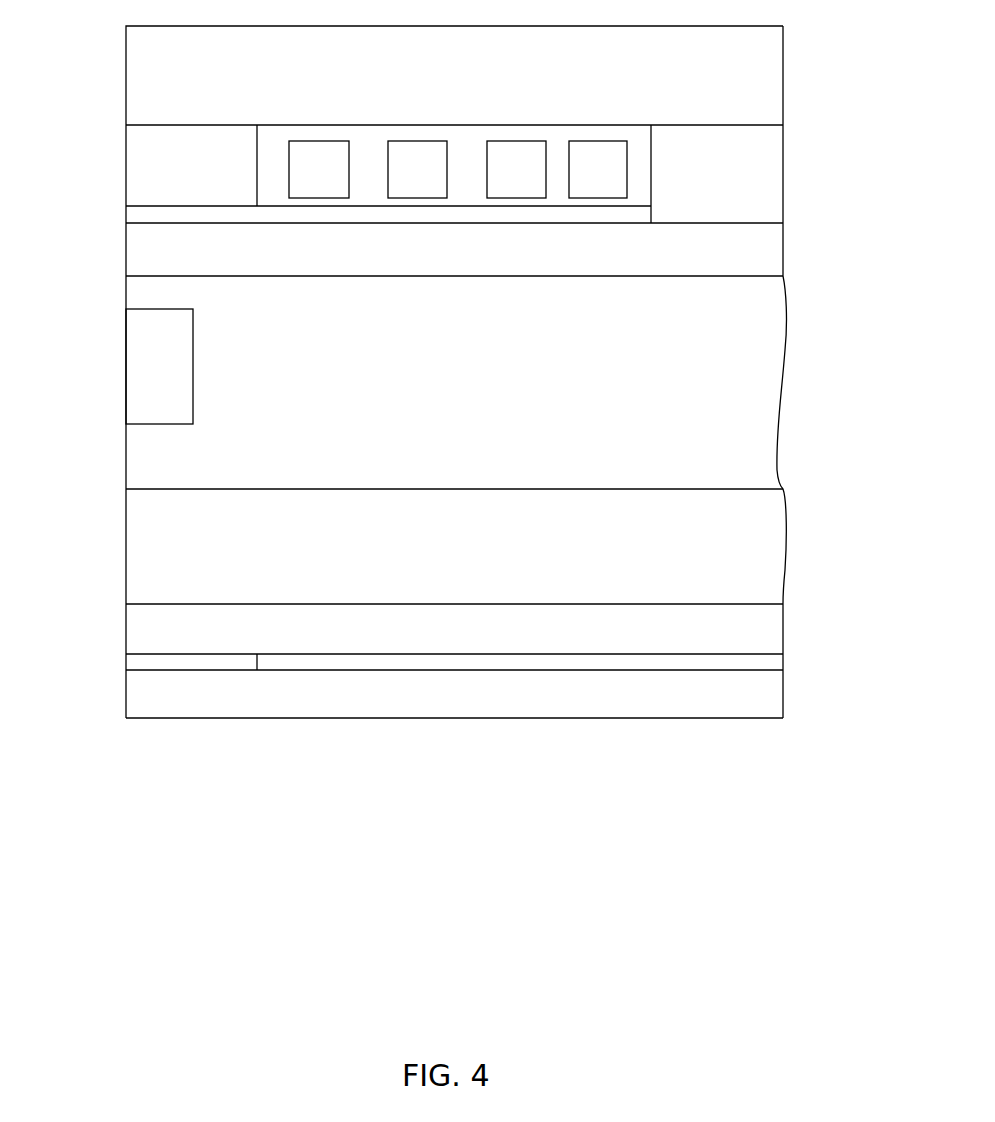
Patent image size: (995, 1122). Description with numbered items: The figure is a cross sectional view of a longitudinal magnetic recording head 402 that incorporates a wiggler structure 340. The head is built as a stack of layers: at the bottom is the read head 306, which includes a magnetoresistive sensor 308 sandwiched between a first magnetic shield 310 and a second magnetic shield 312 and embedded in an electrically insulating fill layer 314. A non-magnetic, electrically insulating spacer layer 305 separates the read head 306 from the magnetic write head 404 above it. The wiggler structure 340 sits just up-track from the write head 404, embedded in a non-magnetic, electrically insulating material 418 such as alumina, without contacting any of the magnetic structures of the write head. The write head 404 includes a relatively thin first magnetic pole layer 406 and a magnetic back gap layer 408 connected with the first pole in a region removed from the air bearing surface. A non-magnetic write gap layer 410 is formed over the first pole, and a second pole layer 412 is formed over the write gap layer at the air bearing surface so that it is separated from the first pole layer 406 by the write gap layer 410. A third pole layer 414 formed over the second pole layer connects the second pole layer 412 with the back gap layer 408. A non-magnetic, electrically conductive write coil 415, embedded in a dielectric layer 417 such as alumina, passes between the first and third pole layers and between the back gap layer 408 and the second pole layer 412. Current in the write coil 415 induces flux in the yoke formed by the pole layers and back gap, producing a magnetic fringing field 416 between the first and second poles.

The longitudinal magnetic recording head 402 is at (124, 91).
The magnetic write head 404 is at (815, 355).
The first magnetic pole layer 406 is at (461, 253).
The magnetic back gap layer 408 is at (741, 167).
The non-magnetic write gap layer 410 is at (357, 213).
The second pole layer 412 is at (224, 157).
The third pole layer 414 is at (461, 73).
The write coil 415 is at (458, 169).
The magnetic fringing field 416 is at (112, 241).
The dielectric layer 417 is at (477, 142).
The non-magnetic, electrically insulating material 418 is at (504, 393).
The wiggler structure 340 is at (175, 364).
The non-magnetic, electrically insulating spacer layer 305 is at (504, 555).
The read head 306 is at (800, 719).
The magnetoresistive sensor 308 is at (144, 661).
The first magnetic shield 310 is at (498, 695).
The second magnetic shield 312 is at (498, 628).
The electrically insulating fill layer 314 is at (669, 662).